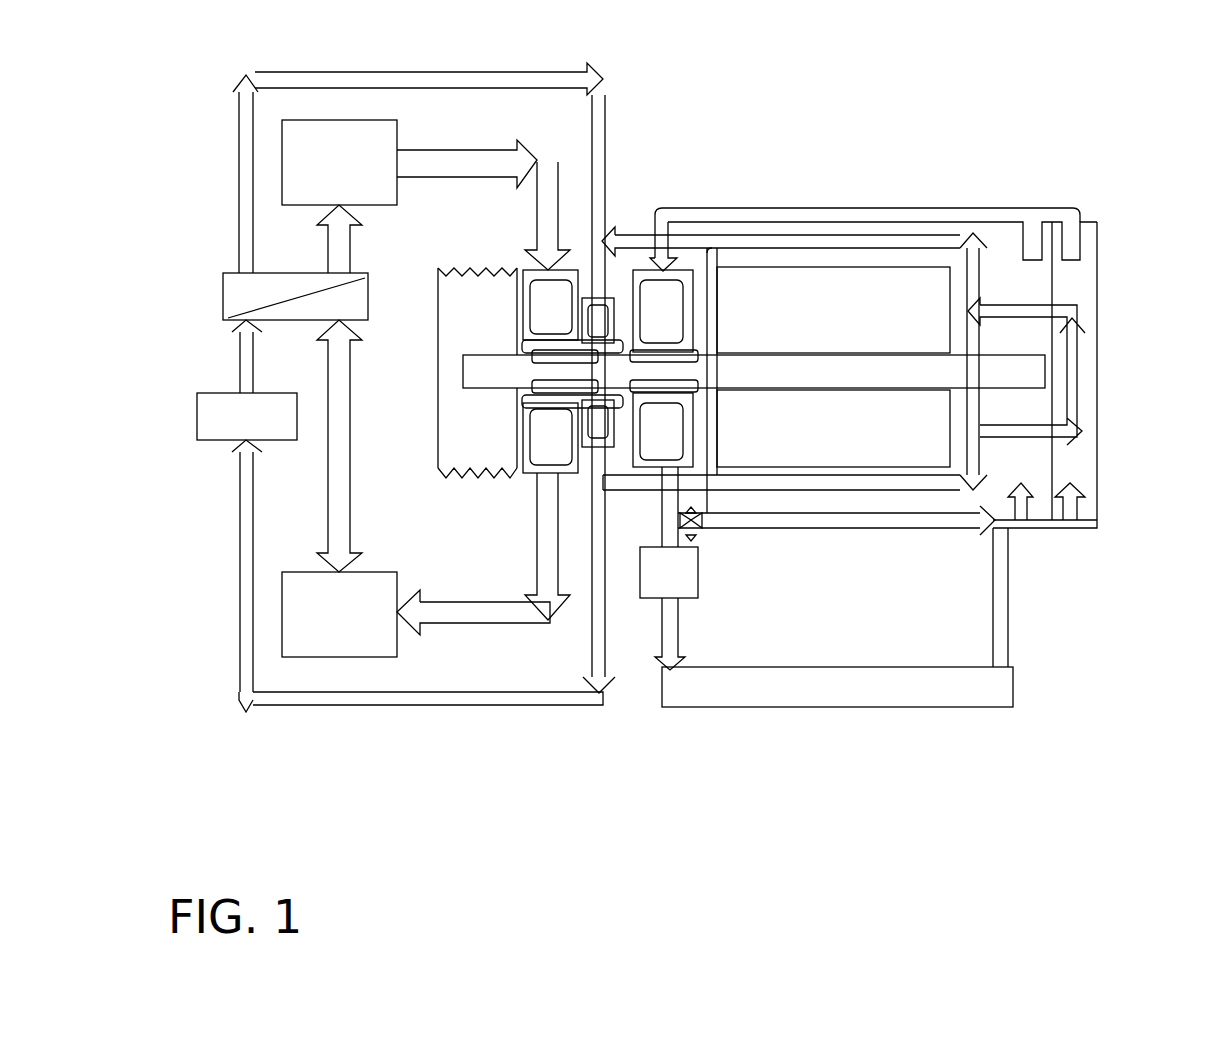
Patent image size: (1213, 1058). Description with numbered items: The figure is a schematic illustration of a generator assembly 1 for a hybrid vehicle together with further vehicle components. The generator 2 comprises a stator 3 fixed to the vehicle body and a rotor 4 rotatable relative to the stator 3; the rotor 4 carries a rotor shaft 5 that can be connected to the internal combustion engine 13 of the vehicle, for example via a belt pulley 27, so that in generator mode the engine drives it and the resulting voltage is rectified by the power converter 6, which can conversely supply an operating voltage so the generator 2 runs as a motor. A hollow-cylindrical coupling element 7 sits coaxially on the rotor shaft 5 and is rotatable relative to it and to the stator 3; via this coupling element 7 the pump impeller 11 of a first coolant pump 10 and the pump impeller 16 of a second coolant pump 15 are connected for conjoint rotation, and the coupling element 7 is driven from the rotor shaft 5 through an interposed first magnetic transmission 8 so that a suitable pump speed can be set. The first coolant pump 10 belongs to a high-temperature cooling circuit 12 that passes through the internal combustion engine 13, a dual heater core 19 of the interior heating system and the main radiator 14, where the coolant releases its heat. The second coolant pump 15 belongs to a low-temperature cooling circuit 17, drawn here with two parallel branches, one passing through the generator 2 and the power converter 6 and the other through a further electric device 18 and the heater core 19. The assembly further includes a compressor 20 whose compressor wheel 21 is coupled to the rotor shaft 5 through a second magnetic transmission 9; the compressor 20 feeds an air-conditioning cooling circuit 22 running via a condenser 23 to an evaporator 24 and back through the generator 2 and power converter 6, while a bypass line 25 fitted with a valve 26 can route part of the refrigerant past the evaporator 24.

The generator assembly 1 is at (1014, 152).
The generator 2 is at (877, 190).
The stator 3 is at (882, 371).
The rotor 4 is at (833, 367).
The rotor shaft 5 is at (857, 355).
The power converter 6 is at (1097, 247).
The coupling element 7 is at (505, 393).
The first magnetic transmission 8 is at (535, 343).
The second magnetic transmission 9 is at (727, 335).
The first coolant pump 10 is at (522, 270).
The pump impeller 11 is at (550, 371).
The high-temperature cooling circuit 12 is at (458, 149).
The internal combustion engine 13 is at (339, 614).
The main radiator 14 is at (339, 162).
The second coolant pump 15 is at (592, 296).
The pump impeller 16 is at (611, 292).
The low-temperature cooling circuit 17 is at (238, 348).
The electric device 18 is at (247, 416).
The heater core 19 is at (295, 388).
The compressor 20 is at (683, 252).
The compressor wheel 21 is at (663, 368).
The air-conditioning cooling circuit 22 is at (945, 208).
The condenser 23 is at (669, 568).
The evaporator 24 is at (837, 687).
The bypass line 25 is at (868, 530).
The valve 26 is at (697, 535).
The belt pulley 27 is at (457, 265).